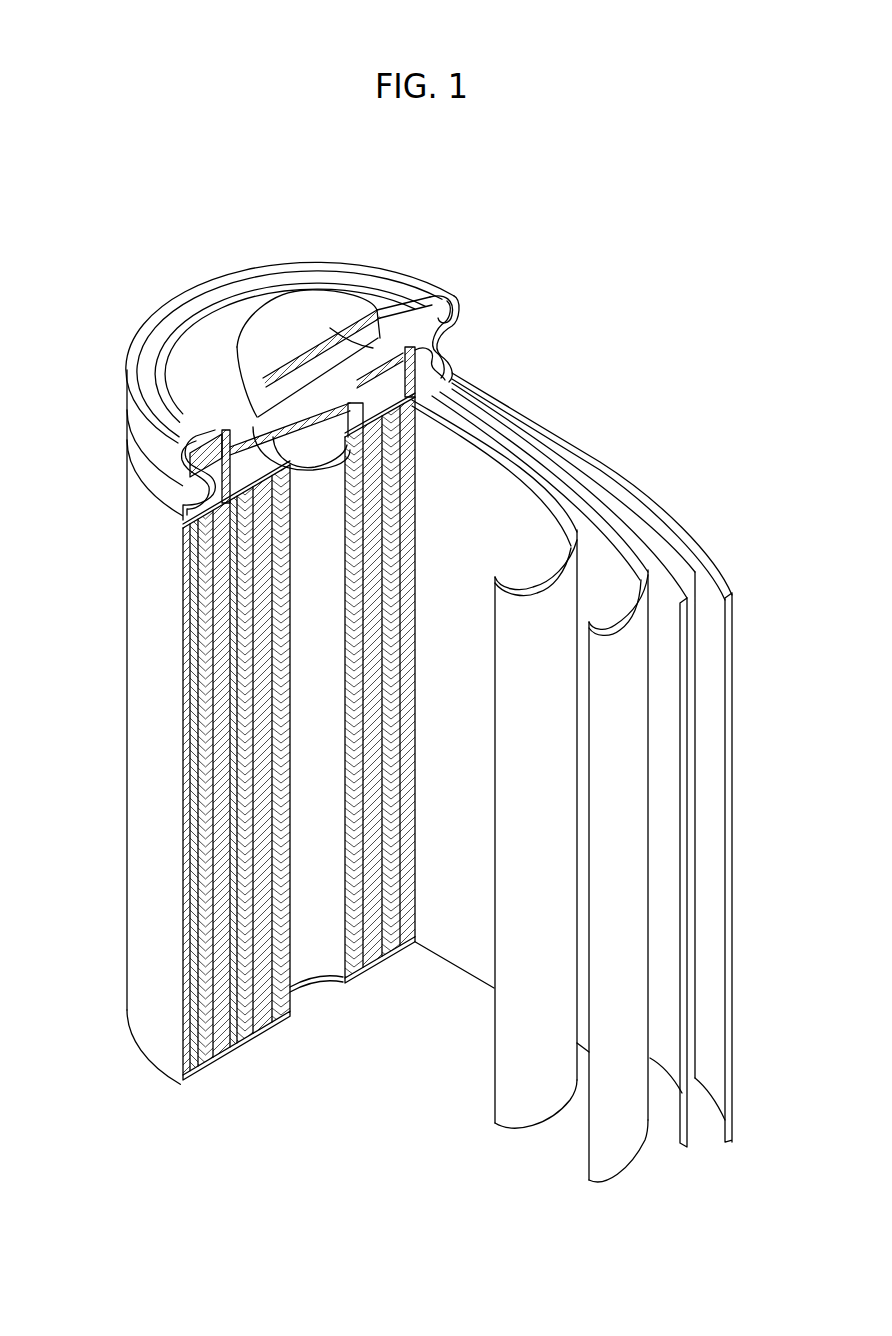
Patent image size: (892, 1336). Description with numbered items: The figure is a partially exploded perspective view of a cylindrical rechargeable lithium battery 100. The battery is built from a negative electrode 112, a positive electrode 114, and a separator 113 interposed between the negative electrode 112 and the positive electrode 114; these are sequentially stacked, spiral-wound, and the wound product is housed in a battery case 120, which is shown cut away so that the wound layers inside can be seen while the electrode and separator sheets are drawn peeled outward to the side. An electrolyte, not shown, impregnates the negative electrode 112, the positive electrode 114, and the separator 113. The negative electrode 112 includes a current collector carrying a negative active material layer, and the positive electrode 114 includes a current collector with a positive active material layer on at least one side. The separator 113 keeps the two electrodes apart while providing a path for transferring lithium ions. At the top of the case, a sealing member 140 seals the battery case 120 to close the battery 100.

The rechargeable lithium battery 100 is at (491, 232).
The negative electrode 112 is at (703, 540).
The separator 113 is at (520, 463).
The positive electrode 114 is at (590, 507).
The battery case 120 is at (148, 688).
The sealing member 140 is at (260, 322).